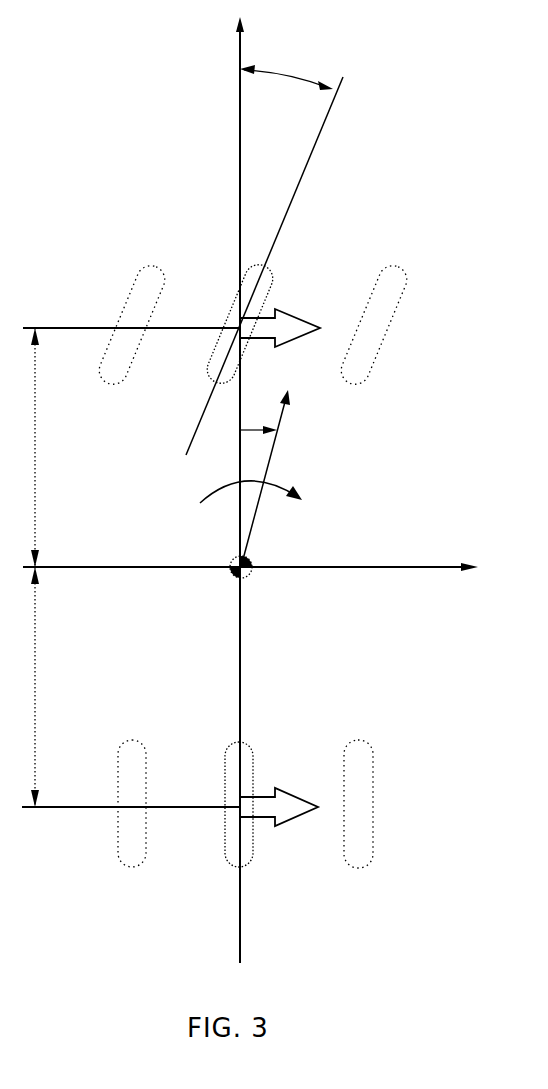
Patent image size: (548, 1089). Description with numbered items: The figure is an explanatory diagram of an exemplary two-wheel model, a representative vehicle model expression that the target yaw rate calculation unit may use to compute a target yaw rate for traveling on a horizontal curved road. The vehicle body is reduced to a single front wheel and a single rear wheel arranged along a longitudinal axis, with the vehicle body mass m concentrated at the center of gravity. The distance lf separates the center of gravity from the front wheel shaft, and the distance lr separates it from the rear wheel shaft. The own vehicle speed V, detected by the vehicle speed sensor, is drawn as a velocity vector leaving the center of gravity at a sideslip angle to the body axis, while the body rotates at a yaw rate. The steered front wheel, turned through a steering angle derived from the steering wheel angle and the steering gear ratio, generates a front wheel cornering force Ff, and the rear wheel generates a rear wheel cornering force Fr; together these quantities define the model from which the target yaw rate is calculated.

The mass of the vehicle body m is at (355, 539).
The cornering force of the front wheel Ff is at (293, 328).
The cornering force of the rear wheel Fr is at (290, 807).
The own vehicle speed V is at (266, 465).
The distance from the center of gravity to the front wheel shaft lf is at (24, 447).
The distance from the center of gravity to the rear wheel shaft lr is at (24, 687).